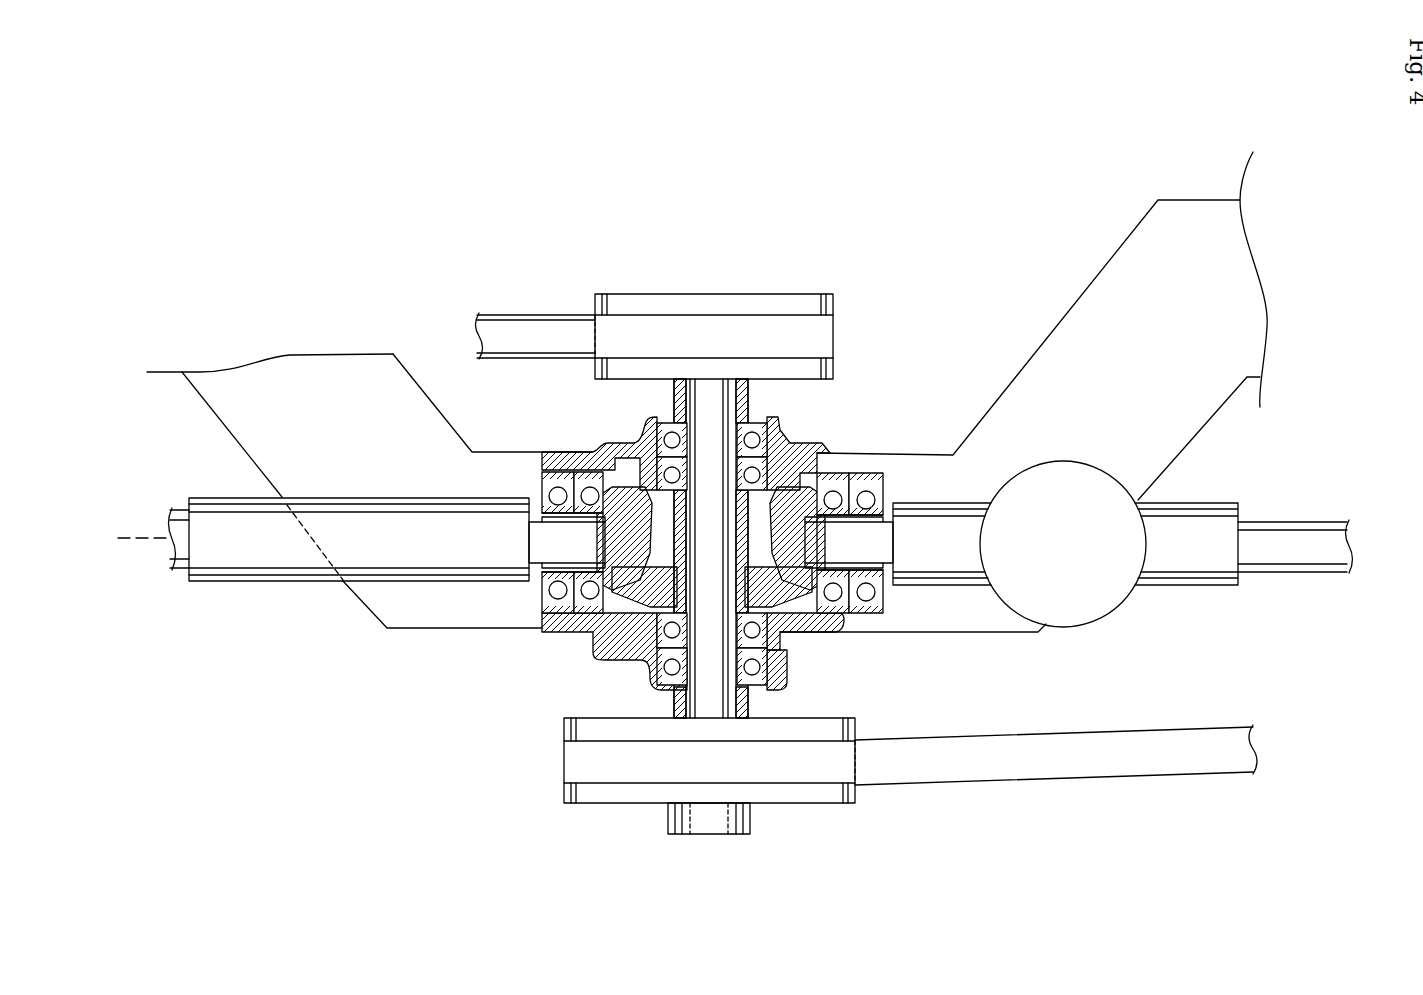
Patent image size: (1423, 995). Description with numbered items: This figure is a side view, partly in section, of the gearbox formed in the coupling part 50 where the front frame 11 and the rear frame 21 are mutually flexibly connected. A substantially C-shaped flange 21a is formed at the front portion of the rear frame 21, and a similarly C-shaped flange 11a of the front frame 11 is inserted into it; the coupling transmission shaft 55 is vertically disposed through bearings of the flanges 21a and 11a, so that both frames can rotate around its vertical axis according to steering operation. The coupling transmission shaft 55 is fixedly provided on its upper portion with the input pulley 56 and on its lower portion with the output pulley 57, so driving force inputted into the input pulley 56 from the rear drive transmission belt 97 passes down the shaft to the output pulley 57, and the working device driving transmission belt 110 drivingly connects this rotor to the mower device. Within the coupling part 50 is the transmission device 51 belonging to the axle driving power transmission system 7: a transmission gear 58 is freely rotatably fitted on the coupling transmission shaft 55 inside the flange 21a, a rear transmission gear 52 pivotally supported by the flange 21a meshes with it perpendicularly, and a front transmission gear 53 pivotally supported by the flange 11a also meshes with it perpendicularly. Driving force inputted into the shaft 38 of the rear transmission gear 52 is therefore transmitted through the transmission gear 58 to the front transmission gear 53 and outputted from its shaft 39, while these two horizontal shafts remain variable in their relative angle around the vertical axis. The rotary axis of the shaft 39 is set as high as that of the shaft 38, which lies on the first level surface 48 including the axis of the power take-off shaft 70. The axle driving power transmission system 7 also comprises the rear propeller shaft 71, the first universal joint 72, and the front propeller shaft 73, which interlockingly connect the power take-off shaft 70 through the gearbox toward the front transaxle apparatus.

The axle driving power transmission system 7 is at (466, 713).
The front frame 11 is at (995, 400).
The flange 11a is at (791, 627).
The rear frame 21 is at (512, 452).
The flange 21a is at (784, 678).
The shaft 38 is at (548, 544).
The shaft 39 is at (872, 543).
The first level surface 48 is at (138, 538).
The coupling part 50 is at (838, 435).
The transmission device 51 is at (653, 530).
The rear transmission gear 52 is at (615, 467).
The front transmission gear 53 is at (800, 502).
The coupling transmission shaft 55 is at (724, 393).
The input pulley 56 is at (768, 294).
The output pulley 57 is at (822, 804).
The transmission gear 58 is at (623, 627).
The power take-off shaft 70 is at (182, 583).
The rear propeller shaft 71 is at (294, 583).
The first universal joint 72 is at (1104, 630).
The front propeller shaft 73 is at (1274, 572).
The rear drive transmission belt 97 is at (501, 315).
The working device driving transmission belt 110 is at (957, 739).